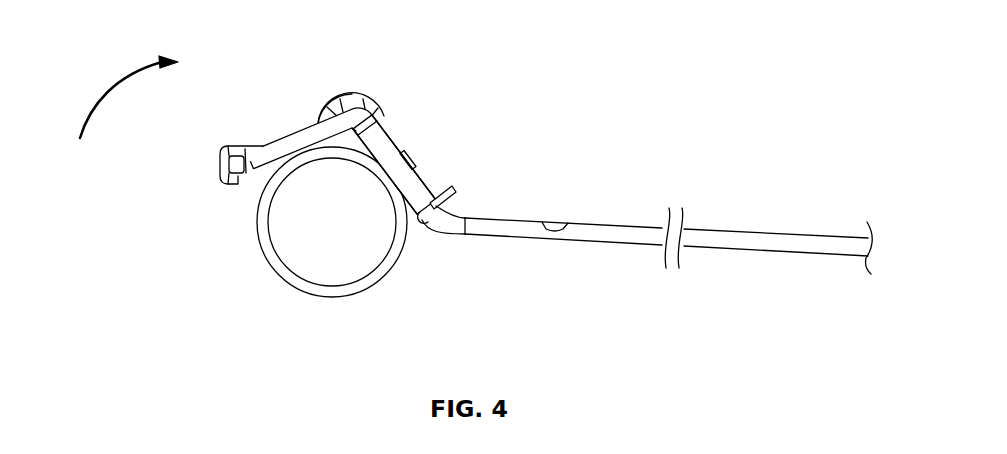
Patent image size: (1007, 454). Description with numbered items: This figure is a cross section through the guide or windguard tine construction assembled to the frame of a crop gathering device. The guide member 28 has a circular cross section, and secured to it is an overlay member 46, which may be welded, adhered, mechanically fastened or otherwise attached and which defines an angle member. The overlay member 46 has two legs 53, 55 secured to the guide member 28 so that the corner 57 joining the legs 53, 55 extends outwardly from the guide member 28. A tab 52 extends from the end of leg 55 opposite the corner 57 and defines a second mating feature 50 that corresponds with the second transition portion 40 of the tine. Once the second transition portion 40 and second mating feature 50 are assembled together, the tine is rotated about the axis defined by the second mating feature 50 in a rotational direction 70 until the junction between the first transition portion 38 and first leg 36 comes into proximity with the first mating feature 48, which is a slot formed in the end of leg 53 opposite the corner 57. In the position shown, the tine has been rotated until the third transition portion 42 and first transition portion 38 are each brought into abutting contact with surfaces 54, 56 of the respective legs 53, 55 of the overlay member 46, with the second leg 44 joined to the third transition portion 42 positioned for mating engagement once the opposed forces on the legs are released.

The guide member 28 is at (383, 275).
The first leg 36 is at (601, 224).
The first transition portion 38 is at (391, 138).
The second transition portion 40 is at (220, 174).
The third transition portion 42 is at (414, 158).
The second leg 44 is at (556, 220).
The overlay member 46 is at (287, 161).
The first mating feature 48 is at (438, 195).
The second mating feature 50 is at (224, 185).
The tab 52 is at (222, 145).
The leg 53 is at (418, 216).
The surface 54 is at (378, 113).
The leg 55 is at (331, 136).
The surface 56 is at (330, 116).
The corner 57 is at (355, 96).
The rotational direction 70 is at (111, 82).